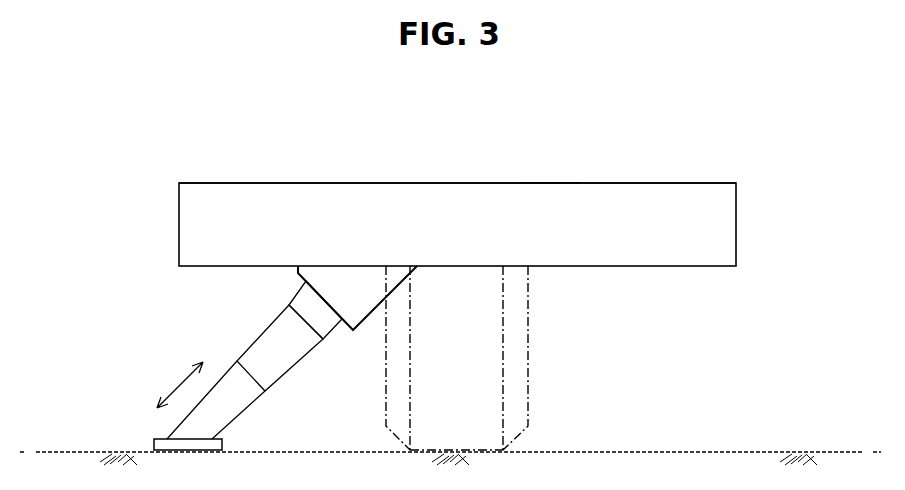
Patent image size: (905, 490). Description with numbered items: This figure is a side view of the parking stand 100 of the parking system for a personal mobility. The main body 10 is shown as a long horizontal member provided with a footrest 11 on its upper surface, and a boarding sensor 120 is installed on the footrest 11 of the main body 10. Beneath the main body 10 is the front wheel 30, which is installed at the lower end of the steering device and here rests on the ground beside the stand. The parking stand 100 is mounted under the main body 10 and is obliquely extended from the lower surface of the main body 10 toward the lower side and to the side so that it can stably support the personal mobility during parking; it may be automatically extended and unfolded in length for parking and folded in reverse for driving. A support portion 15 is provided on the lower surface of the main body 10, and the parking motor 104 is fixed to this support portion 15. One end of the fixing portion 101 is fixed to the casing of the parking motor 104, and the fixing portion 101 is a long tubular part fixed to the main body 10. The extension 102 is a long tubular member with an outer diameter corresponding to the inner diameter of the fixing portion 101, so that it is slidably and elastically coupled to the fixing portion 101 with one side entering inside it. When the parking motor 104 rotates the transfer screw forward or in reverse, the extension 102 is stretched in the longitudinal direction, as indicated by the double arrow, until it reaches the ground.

The main body 10 is at (190, 228).
The footrest 11 is at (232, 182).
The boarding sensor 120 is at (548, 196).
The support portion 15 is at (370, 313).
The front wheel 30 is at (518, 368).
The parking stand 100 is at (248, 362).
The fixing portion 101 is at (277, 335).
The extension 102 is at (226, 427).
The parking motor 104 is at (332, 323).